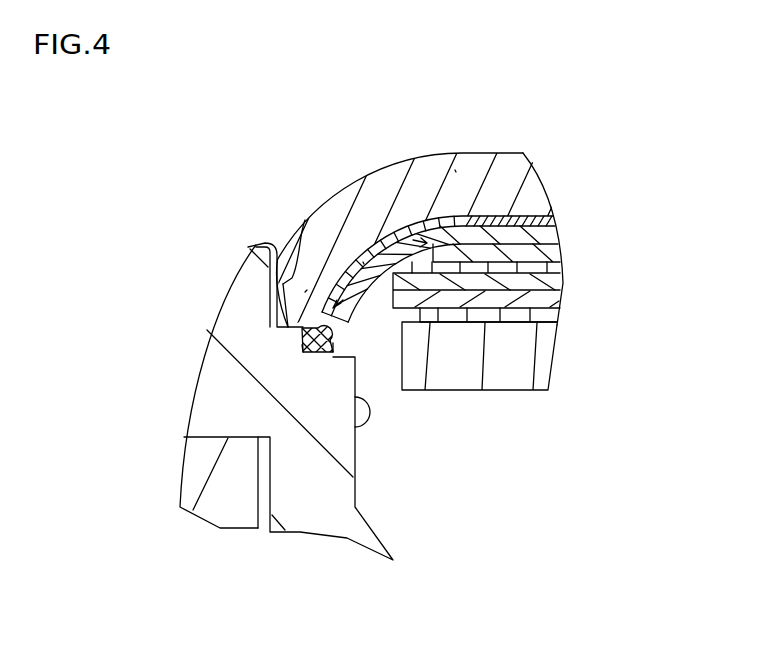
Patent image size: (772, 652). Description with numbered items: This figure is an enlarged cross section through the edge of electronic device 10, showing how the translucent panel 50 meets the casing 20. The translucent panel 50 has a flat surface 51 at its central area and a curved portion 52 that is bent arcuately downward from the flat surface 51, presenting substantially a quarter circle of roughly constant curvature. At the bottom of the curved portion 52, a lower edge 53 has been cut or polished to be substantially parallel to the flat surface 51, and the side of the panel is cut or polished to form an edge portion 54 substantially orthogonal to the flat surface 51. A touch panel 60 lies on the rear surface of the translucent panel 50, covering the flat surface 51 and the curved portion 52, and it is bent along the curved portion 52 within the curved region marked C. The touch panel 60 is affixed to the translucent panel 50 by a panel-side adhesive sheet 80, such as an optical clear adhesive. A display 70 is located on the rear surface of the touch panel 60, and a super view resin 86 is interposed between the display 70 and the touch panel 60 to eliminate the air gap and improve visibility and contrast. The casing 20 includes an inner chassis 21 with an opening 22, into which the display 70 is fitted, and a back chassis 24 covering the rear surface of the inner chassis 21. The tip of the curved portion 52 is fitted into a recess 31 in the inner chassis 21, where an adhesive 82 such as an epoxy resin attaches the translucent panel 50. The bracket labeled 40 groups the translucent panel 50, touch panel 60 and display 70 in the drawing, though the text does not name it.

The electronic device 10 is at (574, 129).
The casing 20 is at (300, 580).
The inner chassis 21 is at (298, 497).
The opening 22 is at (357, 427).
The back chassis 24 is at (242, 500).
The recess 31 is at (307, 290).
The laminated body 40 is at (680, 177).
The translucent panel 50 is at (530, 192).
The flat surface 51 is at (455, 170).
The curved portion 52 is at (302, 317).
The lower edge 53 is at (303, 345).
The edge portion 54 is at (312, 243).
The touch panel 60 is at (533, 238).
The display 70 is at (538, 288).
The panel-side adhesive sheet 80 is at (498, 220).
The adhesive 82 is at (333, 343).
The super view resin 86 is at (503, 262).
The curved region C is at (367, 252).